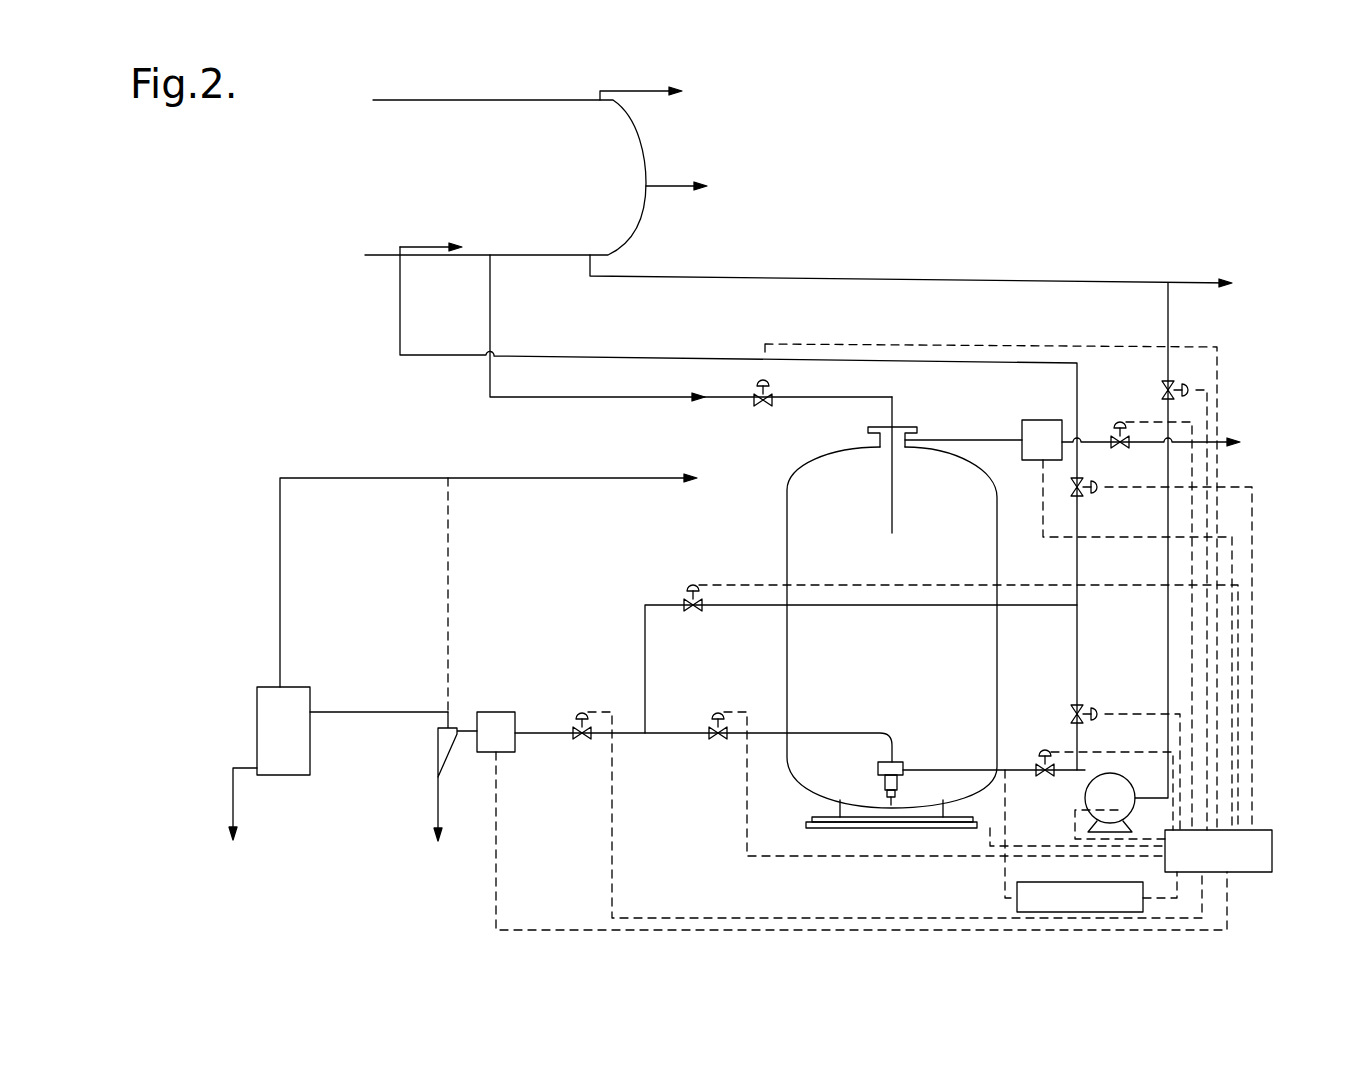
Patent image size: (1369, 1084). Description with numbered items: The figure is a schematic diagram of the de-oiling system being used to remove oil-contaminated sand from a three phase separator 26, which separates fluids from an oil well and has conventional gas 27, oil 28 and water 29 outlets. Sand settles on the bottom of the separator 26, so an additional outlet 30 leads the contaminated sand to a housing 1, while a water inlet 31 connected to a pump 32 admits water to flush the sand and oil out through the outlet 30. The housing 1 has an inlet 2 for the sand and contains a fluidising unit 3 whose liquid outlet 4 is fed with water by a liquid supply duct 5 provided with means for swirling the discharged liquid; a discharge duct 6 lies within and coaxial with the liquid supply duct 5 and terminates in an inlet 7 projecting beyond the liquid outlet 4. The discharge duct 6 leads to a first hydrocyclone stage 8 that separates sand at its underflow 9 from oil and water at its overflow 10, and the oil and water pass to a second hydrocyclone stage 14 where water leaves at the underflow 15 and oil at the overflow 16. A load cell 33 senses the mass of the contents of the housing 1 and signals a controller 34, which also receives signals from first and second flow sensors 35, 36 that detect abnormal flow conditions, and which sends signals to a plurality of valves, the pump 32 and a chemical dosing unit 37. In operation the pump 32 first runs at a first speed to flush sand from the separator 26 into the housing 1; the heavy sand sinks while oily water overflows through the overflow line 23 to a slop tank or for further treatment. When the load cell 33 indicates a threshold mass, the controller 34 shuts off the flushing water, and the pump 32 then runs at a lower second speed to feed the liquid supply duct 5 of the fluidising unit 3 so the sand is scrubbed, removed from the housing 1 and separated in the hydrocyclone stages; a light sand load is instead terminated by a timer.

The housing 1 is at (997, 521).
The inlet 2 is at (890, 490).
The fluidising unit 3 is at (877, 770).
The liquid outlet 4 is at (897, 794).
The liquid supply duct 5 is at (958, 768).
The discharge duct 6 is at (846, 735).
The inlet 7 is at (891, 800).
The first hydrocyclone stage 8 is at (437, 749).
The underflow 9 is at (437, 808).
The overflow 10 is at (354, 712).
The second hydrocyclone stage 14 is at (257, 728).
The underflow 15 is at (233, 798).
The overflow 16 is at (280, 597).
The overflow line 23 is at (962, 438).
The three phase separator 26 is at (482, 102).
The gas outlet 27 is at (658, 96).
The oil outlet 28 is at (675, 186).
The water outlet 29 is at (715, 276).
The outlet 30 is at (495, 302).
The water inlet 31 is at (403, 298).
The pump 32 is at (1085, 790).
The load cell 33 is at (808, 820).
The controller 34 is at (1272, 852).
The first flow sensor 35 is at (500, 712).
The second flow sensor 36 is at (1042, 420).
The chemical dosing unit 37 is at (1064, 905).